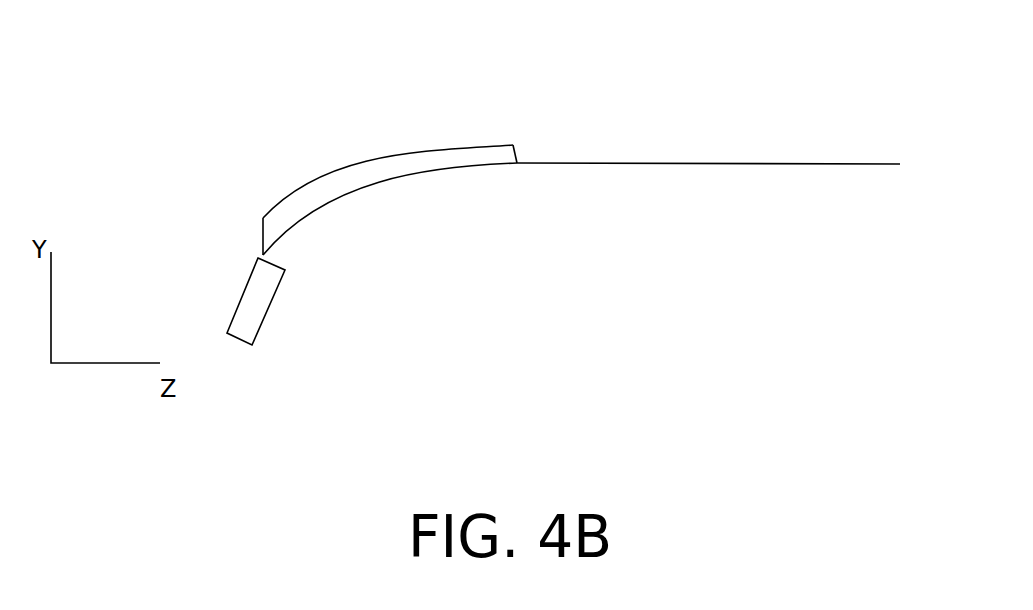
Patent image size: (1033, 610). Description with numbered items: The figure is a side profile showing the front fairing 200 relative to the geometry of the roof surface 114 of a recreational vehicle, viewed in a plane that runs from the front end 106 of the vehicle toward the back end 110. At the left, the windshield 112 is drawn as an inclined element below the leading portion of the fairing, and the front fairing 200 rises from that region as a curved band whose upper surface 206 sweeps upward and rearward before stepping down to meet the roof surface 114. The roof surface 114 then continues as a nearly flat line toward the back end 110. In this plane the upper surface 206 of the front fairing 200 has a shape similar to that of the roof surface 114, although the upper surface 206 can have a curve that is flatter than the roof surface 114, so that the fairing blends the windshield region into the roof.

The front end 106 is at (506, 207).
The upper surface 206 is at (299, 186).
The windshield 112 is at (262, 288).
The front fairing 200 is at (535, 142).
The roof surface 114 is at (760, 131).
The back end 110 is at (733, 131).